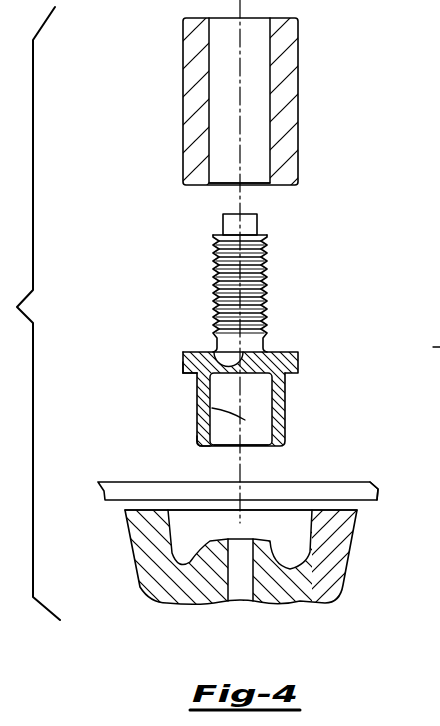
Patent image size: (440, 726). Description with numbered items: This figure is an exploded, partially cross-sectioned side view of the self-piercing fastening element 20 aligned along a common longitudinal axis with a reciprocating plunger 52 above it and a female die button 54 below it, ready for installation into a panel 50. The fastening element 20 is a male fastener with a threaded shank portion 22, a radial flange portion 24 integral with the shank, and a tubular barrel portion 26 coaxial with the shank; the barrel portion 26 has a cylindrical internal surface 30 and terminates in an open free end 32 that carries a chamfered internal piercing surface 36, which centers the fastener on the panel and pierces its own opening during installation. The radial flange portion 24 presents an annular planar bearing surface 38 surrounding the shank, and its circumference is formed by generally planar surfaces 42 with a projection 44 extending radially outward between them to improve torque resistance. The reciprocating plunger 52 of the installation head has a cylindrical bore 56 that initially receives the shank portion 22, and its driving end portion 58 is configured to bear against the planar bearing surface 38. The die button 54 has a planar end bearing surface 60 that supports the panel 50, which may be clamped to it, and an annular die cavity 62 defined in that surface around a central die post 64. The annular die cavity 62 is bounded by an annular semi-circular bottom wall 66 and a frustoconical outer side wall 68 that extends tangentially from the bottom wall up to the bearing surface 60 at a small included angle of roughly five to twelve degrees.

The fastening element 20 is at (272, 344).
The threaded shank portion 22 is at (255, 264).
The radial flange portion 24 is at (272, 372).
The barrel portion 26 is at (285, 402).
The cylindrical internal surface 30 is at (246, 419).
The open free end 32 is at (194, 446).
The chamfered internal piercing surface 36 is at (223, 448).
The annular planar bearing surface 38 is at (275, 350).
The planar surfaces 42 is at (184, 367).
The projection 44 is at (426, 348).
The panel 50 is at (258, 467).
The reciprocating plunger 52 is at (269, 123).
The die button 54 is at (234, 575).
The cylindrical bore 56 is at (270, 97).
The driving end portion 58 is at (280, 187).
The planar end bearing surface 60 is at (338, 498).
The annular die cavity 62 is at (183, 550).
The central die post 64 is at (263, 548).
The annular semi-circular bottom wall 66 is at (187, 567).
The frustoconical outer side wall 68 is at (175, 527).